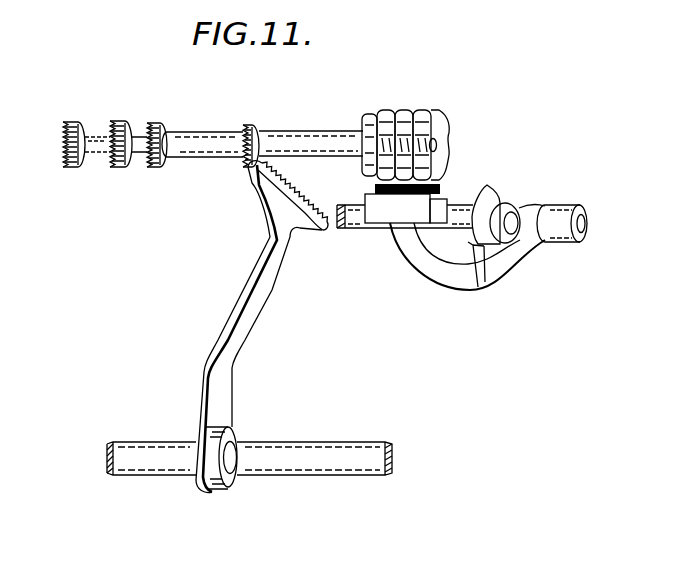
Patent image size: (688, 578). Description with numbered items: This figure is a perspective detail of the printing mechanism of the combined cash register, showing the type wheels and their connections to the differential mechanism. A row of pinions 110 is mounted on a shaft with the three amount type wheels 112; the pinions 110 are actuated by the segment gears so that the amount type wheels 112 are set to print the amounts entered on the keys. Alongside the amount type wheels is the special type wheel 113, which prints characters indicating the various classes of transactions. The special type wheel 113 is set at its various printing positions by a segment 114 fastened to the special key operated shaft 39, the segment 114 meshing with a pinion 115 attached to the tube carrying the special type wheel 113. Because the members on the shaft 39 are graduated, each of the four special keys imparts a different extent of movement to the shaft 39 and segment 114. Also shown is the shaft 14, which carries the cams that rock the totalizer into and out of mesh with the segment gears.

The pinions 110 is at (122, 124).
The pinion 115 is at (256, 126).
The special type wheel 113 is at (373, 117).
The amount type wheels 112 is at (417, 112).
The shaft 14 is at (362, 229).
The segment 114 is at (245, 331).
The special key operated shaft 39 is at (366, 443).